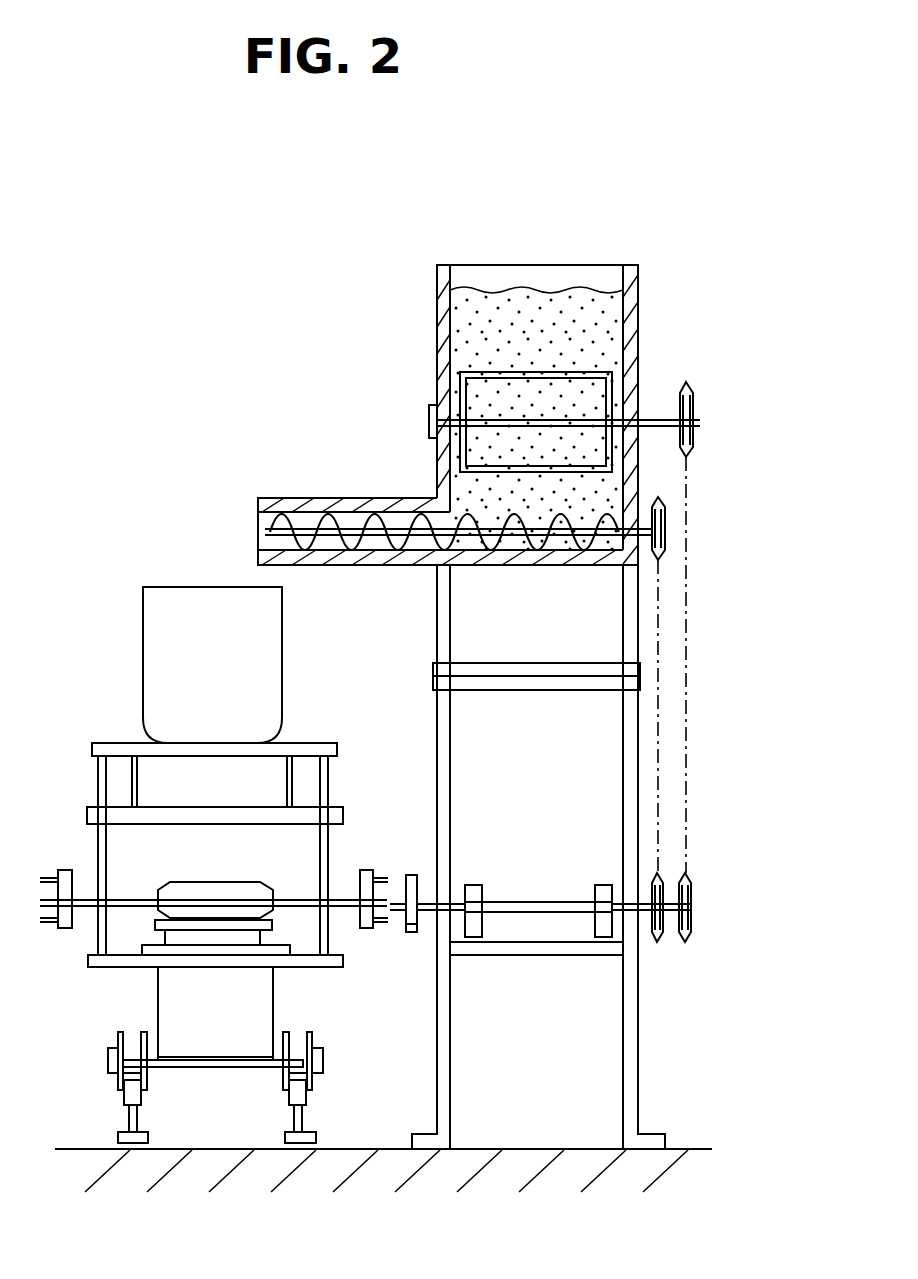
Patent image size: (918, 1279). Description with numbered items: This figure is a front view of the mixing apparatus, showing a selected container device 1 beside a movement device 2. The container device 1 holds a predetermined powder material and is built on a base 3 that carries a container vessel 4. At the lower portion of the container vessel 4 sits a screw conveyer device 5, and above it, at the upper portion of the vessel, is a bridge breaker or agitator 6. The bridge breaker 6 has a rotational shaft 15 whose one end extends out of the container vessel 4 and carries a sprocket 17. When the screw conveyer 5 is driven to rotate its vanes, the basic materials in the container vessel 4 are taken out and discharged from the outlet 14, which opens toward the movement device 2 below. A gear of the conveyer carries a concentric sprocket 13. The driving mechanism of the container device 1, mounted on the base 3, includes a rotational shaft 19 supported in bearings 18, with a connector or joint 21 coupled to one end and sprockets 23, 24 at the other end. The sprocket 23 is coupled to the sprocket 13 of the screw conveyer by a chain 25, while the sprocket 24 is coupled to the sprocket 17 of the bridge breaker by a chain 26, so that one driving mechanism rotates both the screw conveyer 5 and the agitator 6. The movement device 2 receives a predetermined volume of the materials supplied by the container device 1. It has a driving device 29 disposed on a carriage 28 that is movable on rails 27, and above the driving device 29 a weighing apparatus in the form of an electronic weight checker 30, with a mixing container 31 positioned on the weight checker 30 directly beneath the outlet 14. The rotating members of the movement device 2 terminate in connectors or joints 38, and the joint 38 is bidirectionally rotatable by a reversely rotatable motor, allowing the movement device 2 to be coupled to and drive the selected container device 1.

The container device 1 is at (417, 297).
The movement device 2 is at (108, 708).
The base 3 is at (633, 1050).
The container vessel 4 is at (534, 263).
The screw conveyer device 5 is at (482, 514).
The bridge breaker (agitator) 6 is at (462, 372).
The sprocket 13 is at (666, 535).
The outlet 14 is at (236, 574).
The rotational shaft 15 is at (660, 418).
The sprocket 17 is at (694, 423).
The bearings 18 is at (473, 885).
The rotational shaft 19 is at (536, 900).
The connector (joint) 21 is at (410, 875).
The sprocket 23 is at (660, 946).
The sprocket 24 is at (688, 946).
The chain 25 is at (662, 664).
The chain 26 is at (690, 722).
The rails 27 is at (118, 1138).
The carriage 28 is at (132, 965).
The driving device 29 is at (143, 883).
The electronic weight checker 30 is at (236, 796).
The mixing container 31 is at (182, 666).
The connector (joint) 38 is at (65, 930).